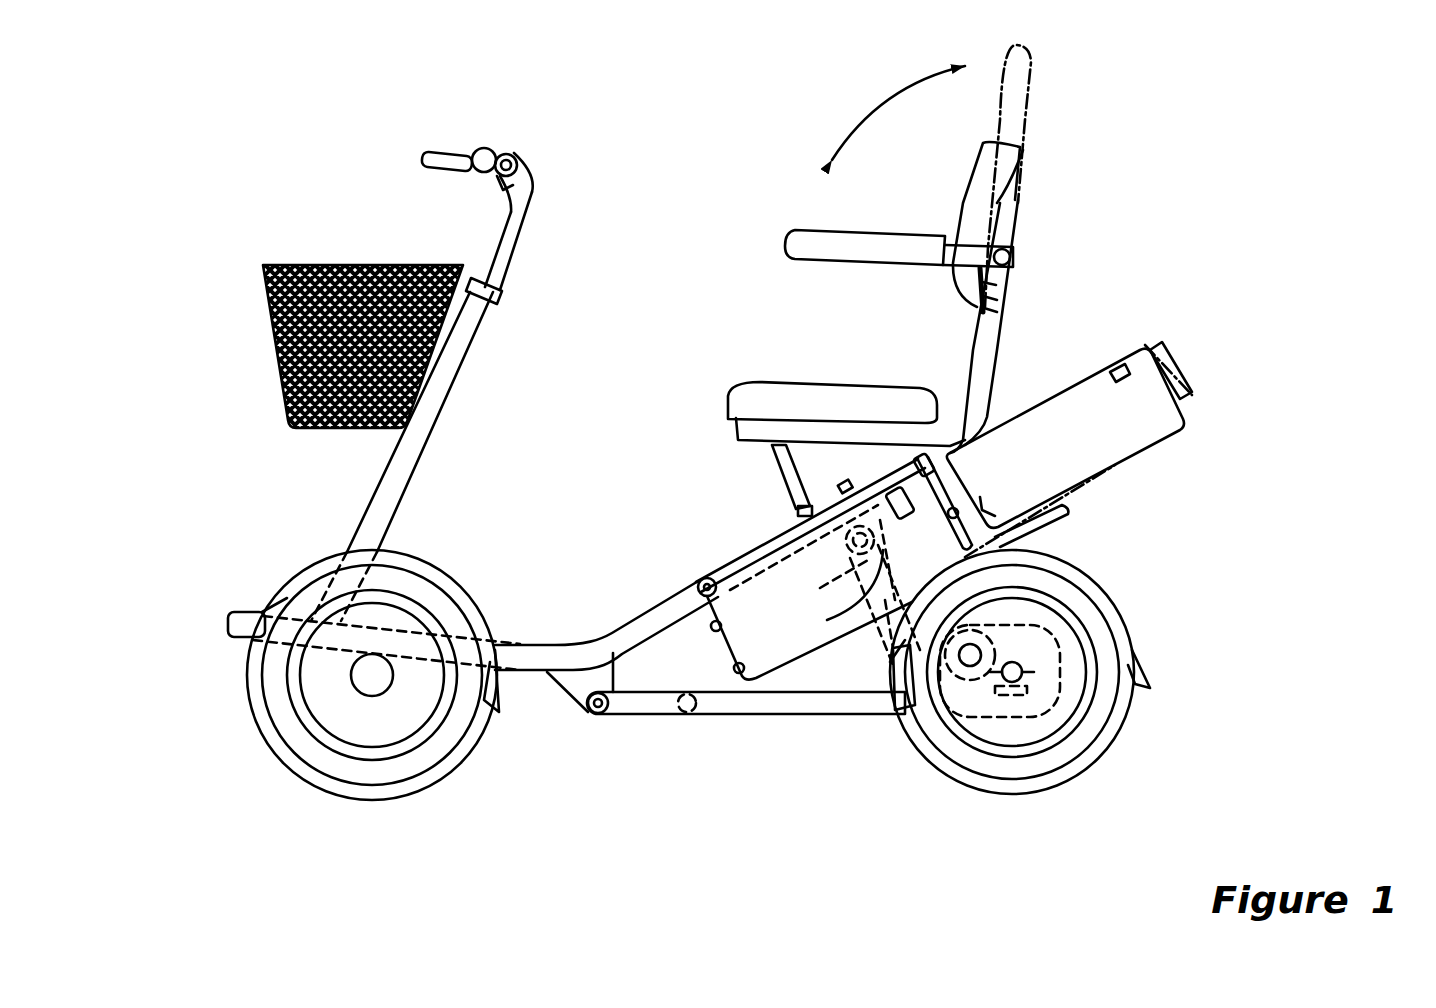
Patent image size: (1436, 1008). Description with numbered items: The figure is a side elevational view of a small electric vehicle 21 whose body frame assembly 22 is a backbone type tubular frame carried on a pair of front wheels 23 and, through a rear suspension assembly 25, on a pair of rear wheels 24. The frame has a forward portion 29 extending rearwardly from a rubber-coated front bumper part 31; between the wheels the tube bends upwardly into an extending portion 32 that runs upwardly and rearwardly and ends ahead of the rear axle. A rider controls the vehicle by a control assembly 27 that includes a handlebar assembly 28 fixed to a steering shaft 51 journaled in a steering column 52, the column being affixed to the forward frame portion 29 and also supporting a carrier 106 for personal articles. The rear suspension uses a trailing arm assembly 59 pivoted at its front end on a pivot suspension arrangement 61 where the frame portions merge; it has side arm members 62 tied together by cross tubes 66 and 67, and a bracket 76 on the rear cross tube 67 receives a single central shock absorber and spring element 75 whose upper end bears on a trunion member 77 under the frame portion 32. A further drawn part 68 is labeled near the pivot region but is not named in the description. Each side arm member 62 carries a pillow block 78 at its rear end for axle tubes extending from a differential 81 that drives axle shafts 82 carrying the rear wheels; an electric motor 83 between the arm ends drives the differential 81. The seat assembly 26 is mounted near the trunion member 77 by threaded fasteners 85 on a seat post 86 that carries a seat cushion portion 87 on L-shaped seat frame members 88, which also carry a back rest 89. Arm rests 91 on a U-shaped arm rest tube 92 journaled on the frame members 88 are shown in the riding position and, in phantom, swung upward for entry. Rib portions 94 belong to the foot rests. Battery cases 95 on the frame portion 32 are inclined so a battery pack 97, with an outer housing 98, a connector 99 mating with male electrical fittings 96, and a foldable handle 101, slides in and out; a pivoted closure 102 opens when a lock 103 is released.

The small vehicle 21 is at (332, 172).
The body frame assembly 22 is at (645, 578).
The front wheels 23 is at (265, 716).
The rear wheels 24 is at (1095, 745).
The rear suspension assembly 25 is at (1152, 582).
The seat assembly 26 is at (750, 330).
The control assembly 27 is at (575, 163).
The handlebar assembly 28 is at (545, 196).
The forward frame portion 29 is at (528, 640).
The front bumper part 31 is at (250, 606).
The extending frame portion 32 is at (735, 556).
The steering shaft 51 is at (512, 268).
The steering column 52 is at (446, 446).
The trailing arm assembly 59 is at (780, 717).
The pivot suspension arrangement 61 is at (590, 720).
The side arm members 62 is at (650, 708).
The cross tube 66 is at (690, 718).
The cross tube 67 is at (905, 708).
The gusset 68 is at (552, 702).
The shock absorber and spring element 75 is at (880, 637).
The bracket 76 is at (1047, 566).
The trunion member 77 is at (812, 562).
The pillow block 78 is at (1060, 686).
The differential 81 is at (1090, 648).
The axle shafts 82 is at (1010, 690).
The electric motor 83 is at (975, 692).
The threaded fasteners 85 is at (795, 500).
The seat post 86 is at (735, 445).
The seat cushion portion 87 is at (790, 380).
The seat frame members 88 is at (980, 332).
The back rest 89 is at (967, 187).
The arm rests 91 is at (860, 230).
The arm rest tube 92 is at (1010, 245).
The rib portions 94 is at (1125, 345).
The battery cases 95 is at (797, 664).
The male electrical fittings 96 is at (704, 640).
The battery pack 97 is at (1068, 373).
The outer housing 98 is at (1185, 440).
The connector 99 is at (1065, 438).
The foldable handle 101 is at (1182, 340).
The pivoted closure 102 is at (965, 500).
The lock 103 is at (936, 470).
The carrier 106 is at (265, 283).